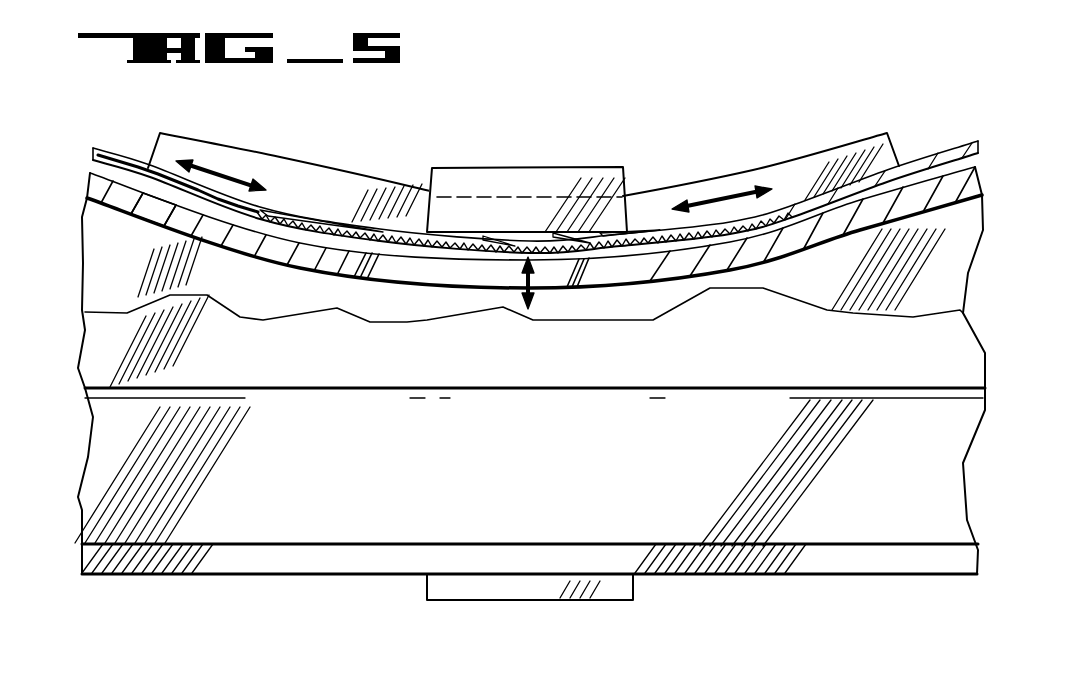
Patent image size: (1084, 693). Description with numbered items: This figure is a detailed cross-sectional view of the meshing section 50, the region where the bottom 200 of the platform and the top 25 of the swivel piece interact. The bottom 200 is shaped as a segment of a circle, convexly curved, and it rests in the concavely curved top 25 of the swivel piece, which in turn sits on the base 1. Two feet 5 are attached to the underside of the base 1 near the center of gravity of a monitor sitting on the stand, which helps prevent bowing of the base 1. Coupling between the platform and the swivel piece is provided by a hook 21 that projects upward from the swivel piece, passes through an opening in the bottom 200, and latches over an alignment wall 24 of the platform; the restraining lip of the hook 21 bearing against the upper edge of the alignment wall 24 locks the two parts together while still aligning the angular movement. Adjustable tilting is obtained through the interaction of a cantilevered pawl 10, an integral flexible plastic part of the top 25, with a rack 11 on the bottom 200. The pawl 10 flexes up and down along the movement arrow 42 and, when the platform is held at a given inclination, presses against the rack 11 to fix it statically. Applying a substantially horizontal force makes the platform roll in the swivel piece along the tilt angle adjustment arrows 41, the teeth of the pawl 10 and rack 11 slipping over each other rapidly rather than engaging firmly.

The base 1 is at (353, 517).
The feet 5 is at (498, 585).
The cantilevered pawl 10 is at (473, 277).
The rack 11 is at (403, 247).
The hook 21 is at (463, 190).
The alignment wall 24 is at (798, 180).
The top of swivel piece 25 is at (150, 212).
The tilt angle adjustment arrows 41 is at (204, 162).
The movement arrow 42 is at (538, 285).
The meshing section 50 is at (536, 106).
The bottom of platform 200 is at (136, 163).